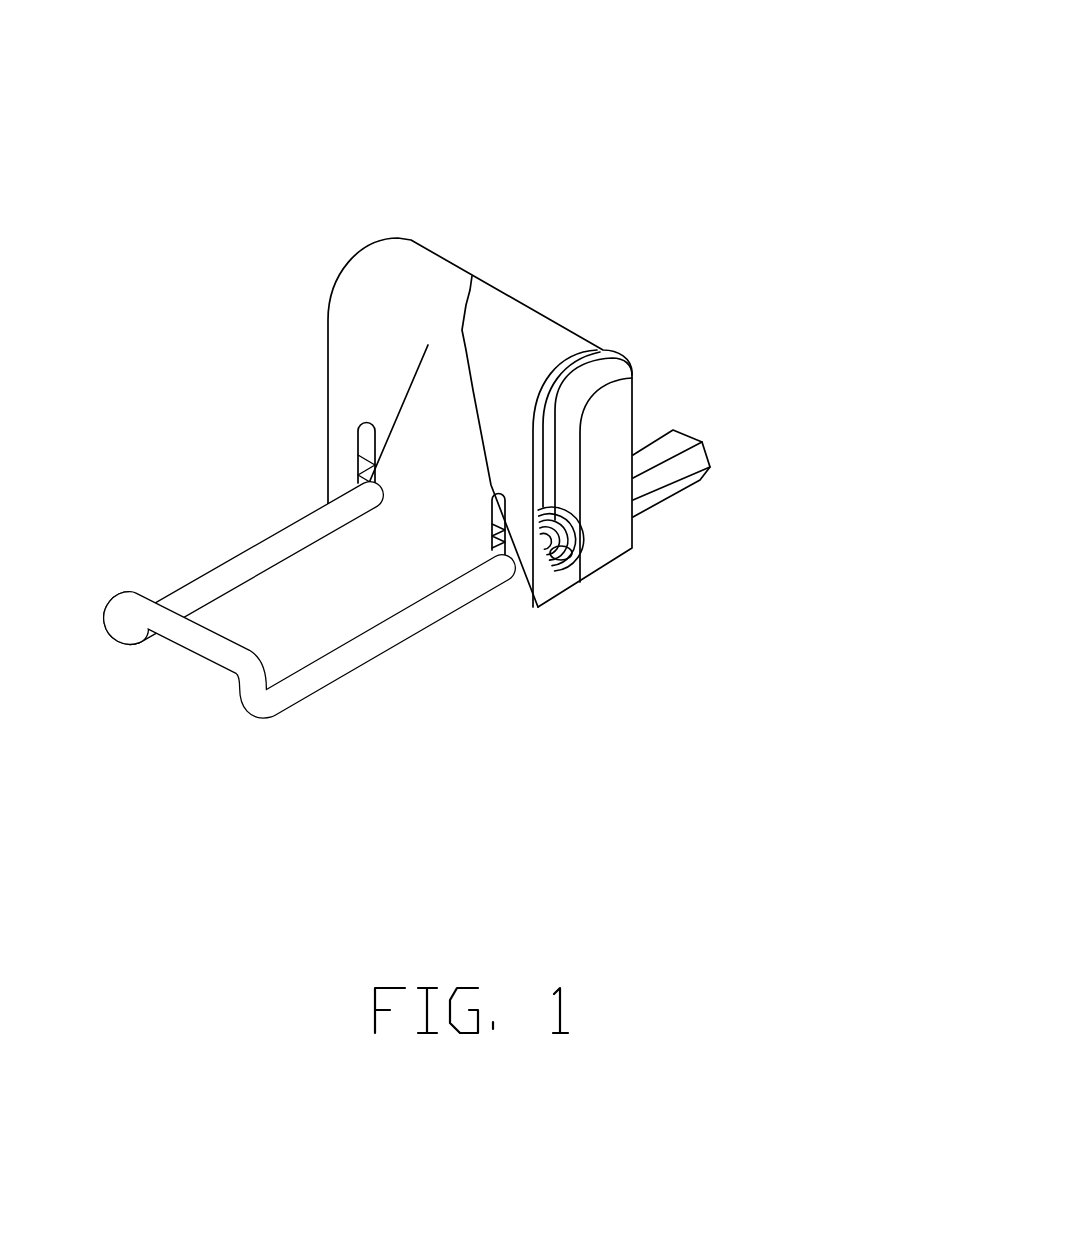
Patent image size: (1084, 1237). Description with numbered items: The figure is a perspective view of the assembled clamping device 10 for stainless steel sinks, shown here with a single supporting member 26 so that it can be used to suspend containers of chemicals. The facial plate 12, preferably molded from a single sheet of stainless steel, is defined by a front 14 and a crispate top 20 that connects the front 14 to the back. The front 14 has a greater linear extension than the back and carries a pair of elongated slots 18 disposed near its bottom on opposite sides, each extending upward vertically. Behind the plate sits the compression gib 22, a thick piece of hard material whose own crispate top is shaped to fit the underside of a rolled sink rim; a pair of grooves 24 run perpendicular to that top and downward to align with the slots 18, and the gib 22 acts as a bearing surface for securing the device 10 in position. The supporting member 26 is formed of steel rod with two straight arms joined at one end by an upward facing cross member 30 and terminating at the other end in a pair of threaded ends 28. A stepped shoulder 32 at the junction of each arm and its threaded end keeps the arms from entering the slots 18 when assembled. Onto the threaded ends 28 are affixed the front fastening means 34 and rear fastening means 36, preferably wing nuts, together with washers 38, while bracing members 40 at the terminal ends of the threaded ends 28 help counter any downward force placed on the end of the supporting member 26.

The clamping device 10 is at (297, 252).
The facial plate 12 is at (527, 348).
The front 14 is at (434, 522).
The elongated slots 18 is at (367, 437).
The crispate top 20 is at (383, 258).
The compression gib 22 is at (597, 479).
The grooves 24 is at (556, 434).
The supporting member 26 is at (233, 567).
The threaded ends 28 is at (556, 568).
The cross member 30 is at (132, 597).
The stepped shoulder 32 is at (362, 482).
The front fastening means 34 is at (428, 345).
The rear fastening means 36 is at (577, 577).
The washers 38 is at (578, 561).
The bracing members 40 is at (678, 443).